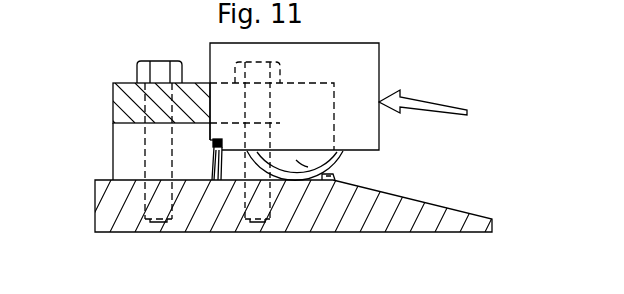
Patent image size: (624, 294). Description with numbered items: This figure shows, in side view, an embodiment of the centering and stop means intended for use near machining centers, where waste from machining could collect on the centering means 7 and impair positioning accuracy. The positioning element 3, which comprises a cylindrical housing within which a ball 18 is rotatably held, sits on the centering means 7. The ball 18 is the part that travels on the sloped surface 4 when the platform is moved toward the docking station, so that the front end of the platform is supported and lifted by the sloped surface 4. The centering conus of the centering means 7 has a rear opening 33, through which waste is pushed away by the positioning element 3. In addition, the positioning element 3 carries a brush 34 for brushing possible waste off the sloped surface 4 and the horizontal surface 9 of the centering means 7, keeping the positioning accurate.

The positioning element 3 is at (379, 62).
The sloped surface 4 is at (417, 200).
The centering means 7 is at (142, 107).
The horizontal surface 9 is at (333, 177).
The ball 18 is at (303, 163).
The rear opening 33 is at (140, 145).
The brush 34 is at (212, 162).